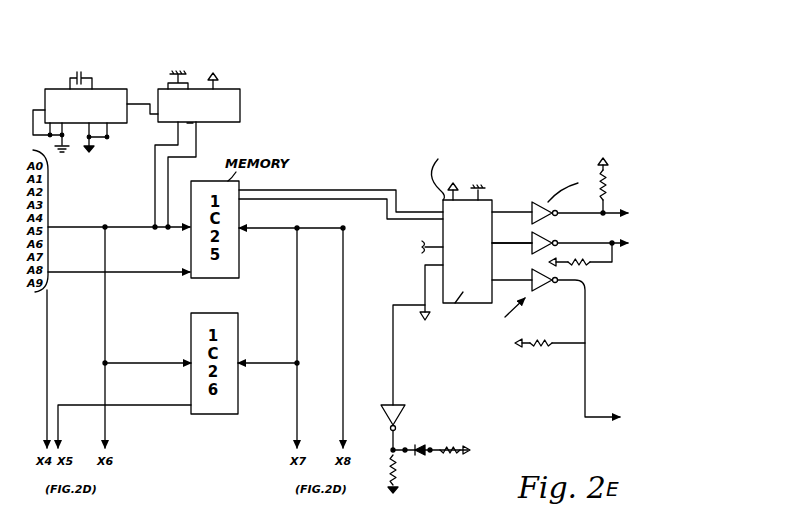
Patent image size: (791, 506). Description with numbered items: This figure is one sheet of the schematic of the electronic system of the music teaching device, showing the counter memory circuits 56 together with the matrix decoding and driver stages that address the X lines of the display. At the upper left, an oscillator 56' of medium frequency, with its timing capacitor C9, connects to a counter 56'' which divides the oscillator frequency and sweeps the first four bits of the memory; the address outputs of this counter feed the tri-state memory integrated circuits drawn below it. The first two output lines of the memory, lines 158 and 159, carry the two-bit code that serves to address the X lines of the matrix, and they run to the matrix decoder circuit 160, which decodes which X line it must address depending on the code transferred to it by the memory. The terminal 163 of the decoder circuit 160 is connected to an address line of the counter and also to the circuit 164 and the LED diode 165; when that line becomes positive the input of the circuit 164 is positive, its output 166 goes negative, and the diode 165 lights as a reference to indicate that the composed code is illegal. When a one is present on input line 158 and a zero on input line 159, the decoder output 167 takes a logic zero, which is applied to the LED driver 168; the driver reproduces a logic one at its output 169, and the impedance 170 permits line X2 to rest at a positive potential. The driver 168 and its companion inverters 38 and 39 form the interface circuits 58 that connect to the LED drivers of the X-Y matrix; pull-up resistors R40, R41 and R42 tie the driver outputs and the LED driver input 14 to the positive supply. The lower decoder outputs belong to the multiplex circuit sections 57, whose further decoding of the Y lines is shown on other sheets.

The counter memory circuits 56 is at (232, 103).
The oscillator 56' is at (92, 128).
The counter 56'' is at (202, 174).
The multiplex circuit sections 57 is at (484, 255).
The interface circuits 58 is at (576, 277).
The driver 38 is at (587, 206).
The driver 39 is at (531, 250).
The LED driver 14 is at (516, 305).
The first memory output line 158 is at (348, 190).
The second memory output line 159 is at (370, 200).
The matrix decoder circuit 160 is at (450, 303).
The terminal of decoder circuit 163 is at (425, 265).
The inverter circuit 164 is at (400, 407).
The LED diode 165 is at (422, 457).
The output of circuit 164 166 is at (392, 452).
The decoder output 167 is at (518, 243).
The LED driver 168 is at (545, 237).
The output of LED driver 169 is at (575, 261).
The impedance 170 is at (592, 284).
The capacitor C9 is at (72, 77).
The pull-up resistor R40 is at (606, 178).
The pull-up resistor R41 is at (568, 252).
The pull-up resistor R42 is at (541, 351).